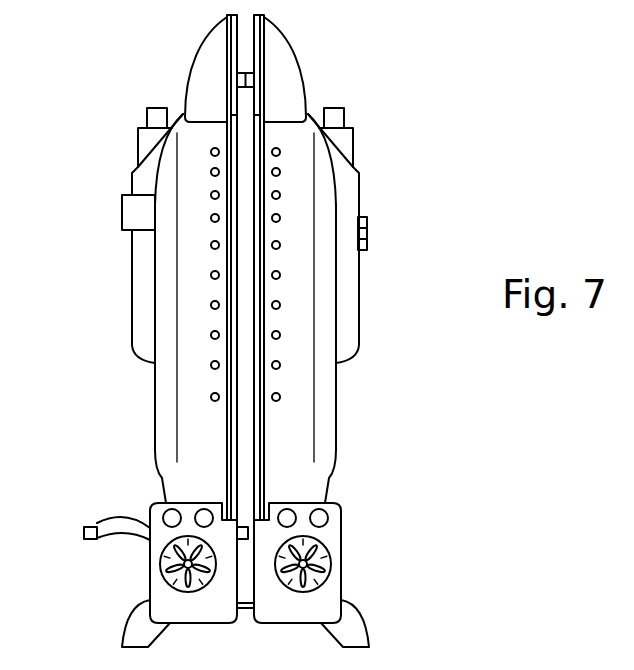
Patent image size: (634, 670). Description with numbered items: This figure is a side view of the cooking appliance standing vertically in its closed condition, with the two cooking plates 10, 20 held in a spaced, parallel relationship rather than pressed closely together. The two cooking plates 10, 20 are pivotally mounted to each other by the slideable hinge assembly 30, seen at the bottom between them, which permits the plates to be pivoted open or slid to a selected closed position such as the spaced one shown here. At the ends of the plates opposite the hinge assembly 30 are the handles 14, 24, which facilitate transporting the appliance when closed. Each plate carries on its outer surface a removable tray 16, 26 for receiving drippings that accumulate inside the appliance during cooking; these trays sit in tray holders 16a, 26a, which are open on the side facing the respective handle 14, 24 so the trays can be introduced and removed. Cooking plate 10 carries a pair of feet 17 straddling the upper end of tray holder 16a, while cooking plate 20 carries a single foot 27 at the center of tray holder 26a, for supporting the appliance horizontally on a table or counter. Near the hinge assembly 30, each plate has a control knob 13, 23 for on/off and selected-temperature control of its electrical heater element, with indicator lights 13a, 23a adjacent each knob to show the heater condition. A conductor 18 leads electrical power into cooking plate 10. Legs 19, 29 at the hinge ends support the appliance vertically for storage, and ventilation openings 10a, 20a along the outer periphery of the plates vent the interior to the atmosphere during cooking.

The cooking plate 10 is at (148, 424).
The ventilation openings 10a is at (211, 306).
The control knob 13 is at (170, 572).
The indicator lights 13a is at (172, 527).
The handle 14 is at (205, 57).
The removable tray 16 is at (152, 118).
The tray holder 16a is at (148, 140).
The feet 17 is at (135, 210).
The conductor 18 is at (90, 529).
The leg 19 is at (133, 637).
The cooking plate 20 is at (345, 424).
The ventilation openings 20a is at (280, 306).
The control knob 23 is at (327, 567).
The indicator lights 23a is at (327, 519).
The handle 24 is at (285, 57).
The removable tray 26 is at (337, 114).
The tray holder 26a is at (347, 140).
The foot 27 is at (367, 227).
The leg 29 is at (362, 636).
The hinge assembly 30 is at (246, 616).